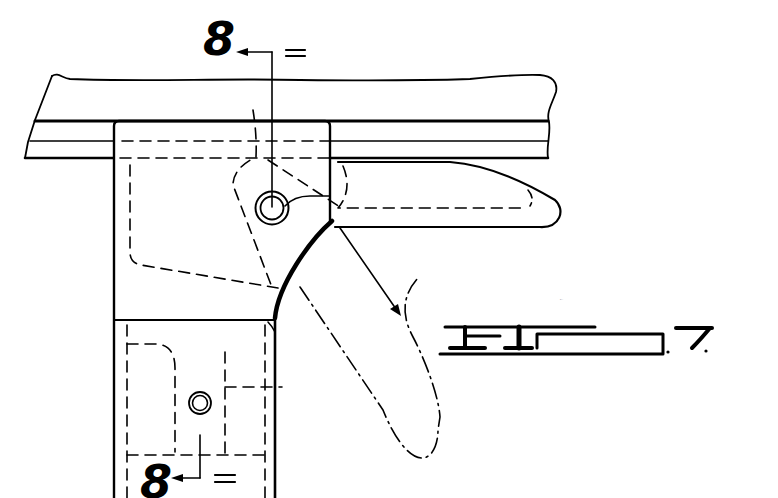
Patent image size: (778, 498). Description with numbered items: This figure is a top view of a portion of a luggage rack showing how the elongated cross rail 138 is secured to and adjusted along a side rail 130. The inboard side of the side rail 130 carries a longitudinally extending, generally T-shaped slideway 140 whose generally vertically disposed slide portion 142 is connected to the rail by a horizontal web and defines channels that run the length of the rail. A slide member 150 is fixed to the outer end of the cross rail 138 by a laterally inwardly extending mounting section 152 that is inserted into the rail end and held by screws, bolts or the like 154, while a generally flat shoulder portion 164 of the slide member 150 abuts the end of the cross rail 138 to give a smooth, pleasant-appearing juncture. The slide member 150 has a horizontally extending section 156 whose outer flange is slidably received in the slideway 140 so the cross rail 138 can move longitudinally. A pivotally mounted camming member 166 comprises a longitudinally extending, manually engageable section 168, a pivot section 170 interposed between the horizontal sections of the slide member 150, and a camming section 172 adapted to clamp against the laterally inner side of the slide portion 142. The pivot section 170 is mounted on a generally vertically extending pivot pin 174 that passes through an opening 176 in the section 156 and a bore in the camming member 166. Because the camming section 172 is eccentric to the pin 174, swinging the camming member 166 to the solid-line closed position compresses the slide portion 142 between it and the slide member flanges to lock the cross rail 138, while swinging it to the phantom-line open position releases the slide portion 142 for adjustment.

The side rail 130 is at (480, 70).
The T-shaped slideway 140 is at (558, 147).
The slide portion 142 is at (421, 148).
The slide member 150 is at (106, 212).
The mounting section 152 is at (282, 387).
The screws, bolts or the like 154 is at (202, 388).
The horizontally extending section 156 is at (120, 296).
The cross rail 138 is at (284, 467).
The shoulder portion 164 is at (270, 330).
The camming member 166 is at (407, 234).
The manually engageable section 168 is at (542, 220).
The pivot section 170 is at (297, 257).
The camming section 172 is at (252, 112).
The pivot pin 174 is at (259, 226).
The opening 176 is at (330, 197).